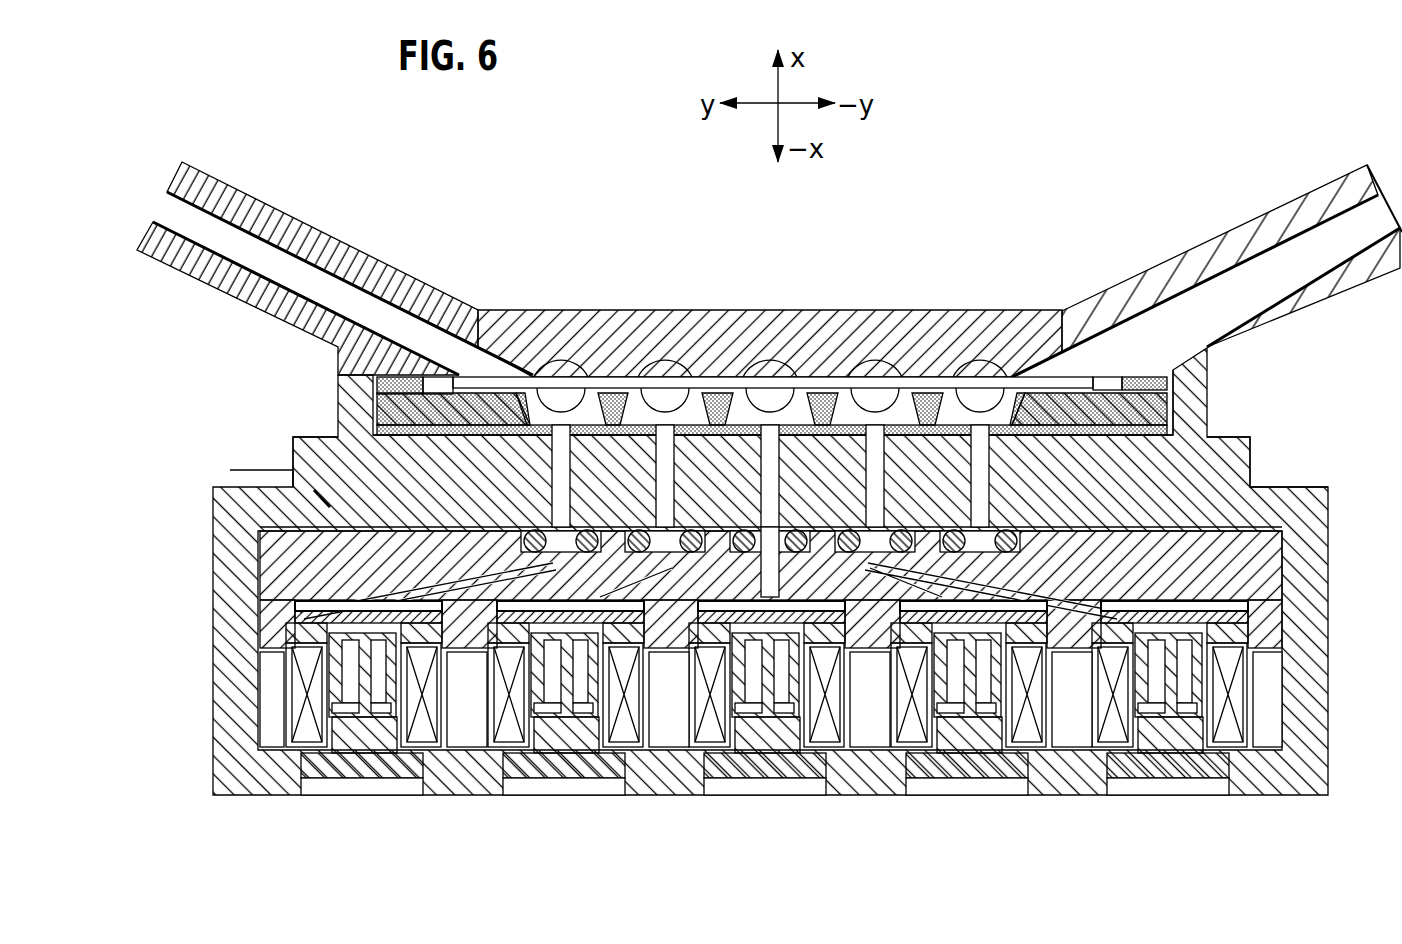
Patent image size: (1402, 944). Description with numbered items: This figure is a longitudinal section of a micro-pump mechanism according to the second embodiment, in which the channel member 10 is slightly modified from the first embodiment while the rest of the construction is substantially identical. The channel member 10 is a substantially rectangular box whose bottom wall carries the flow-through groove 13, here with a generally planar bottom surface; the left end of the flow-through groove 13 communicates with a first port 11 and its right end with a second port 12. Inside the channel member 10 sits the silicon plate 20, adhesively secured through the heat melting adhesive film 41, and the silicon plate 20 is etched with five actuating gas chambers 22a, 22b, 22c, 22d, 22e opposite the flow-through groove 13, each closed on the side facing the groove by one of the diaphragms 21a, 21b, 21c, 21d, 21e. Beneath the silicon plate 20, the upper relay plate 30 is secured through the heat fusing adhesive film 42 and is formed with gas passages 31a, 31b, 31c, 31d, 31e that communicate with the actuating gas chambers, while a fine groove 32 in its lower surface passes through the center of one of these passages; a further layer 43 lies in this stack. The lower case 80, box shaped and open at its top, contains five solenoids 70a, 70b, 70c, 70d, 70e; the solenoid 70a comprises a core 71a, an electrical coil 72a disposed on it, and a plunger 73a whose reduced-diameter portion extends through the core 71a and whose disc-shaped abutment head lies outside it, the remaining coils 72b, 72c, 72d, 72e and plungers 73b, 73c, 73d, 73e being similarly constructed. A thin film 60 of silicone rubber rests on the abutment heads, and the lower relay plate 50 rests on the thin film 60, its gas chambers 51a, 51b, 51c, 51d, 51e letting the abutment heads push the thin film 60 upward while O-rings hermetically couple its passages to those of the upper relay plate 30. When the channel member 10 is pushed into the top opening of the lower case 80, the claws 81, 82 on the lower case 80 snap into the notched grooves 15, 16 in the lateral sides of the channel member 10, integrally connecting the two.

The channel member 10 is at (1142, 207).
The first port 11 is at (244, 240).
The second port 12 is at (1303, 242).
The flow-through groove 13 is at (481, 384).
The notched groove 15 is at (1247, 472).
The notched groove 16 is at (322, 462).
The silicon plate 20 is at (376, 408).
The diaphragm 21a is at (522, 398).
The diaphragm 21b is at (626, 400).
The diaphragm 21c is at (735, 400).
The diaphragm 21d is at (842, 400).
The diaphragm 21e is at (950, 400).
The actuating gas chamber 22a is at (574, 394).
The actuating gas chamber 22b is at (680, 394).
The actuating gas chamber 22c is at (785, 394).
The actuating gas chamber 22d is at (890, 394).
The actuating gas chamber 22e is at (995, 394).
The upper relay plate 30 is at (412, 518).
The gas passage 31a is at (556, 392).
The gas passage 31b is at (669, 392).
The gas passage 31c is at (774, 392).
The gas passage 31d is at (879, 392).
The gas passage 31e is at (984, 392).
The fine groove 32 is at (1175, 505).
The heat melting adhesive film 41 is at (374, 384).
The heat fusing adhesive film 42 is at (1170, 382).
The adhesive layer 43 is at (376, 430).
The lower relay plate 50 is at (1262, 553).
The gas chamber 51a is at (422, 742).
The gas chamber 51b is at (624, 742).
The gas chamber 51c is at (825, 742).
The gas chamber 51d is at (1027, 742).
The gas chamber 51e is at (1228, 742).
The thin film 60 is at (1285, 650).
The solenoid 70a is at (387, 784).
The solenoid 70b is at (589, 784).
The solenoid 70c is at (790, 784).
The solenoid 70d is at (992, 784).
The solenoid 70e is at (1193, 784).
The core 71a is at (264, 672).
The electrical coil 72a is at (304, 762).
The electrical coil 72b is at (506, 762).
The electrical coil 72c is at (707, 762).
The electrical coil 72d is at (909, 762).
The electrical coil 72e is at (1110, 762).
The plunger 73a is at (360, 756).
The plunger 73b is at (562, 756).
The plunger 73c is at (763, 756).
The plunger 73d is at (965, 756).
The plunger 73e is at (1166, 756).
The lower case 80 is at (1302, 720).
The claw 81 is at (1206, 507).
The claw 82 is at (346, 490).